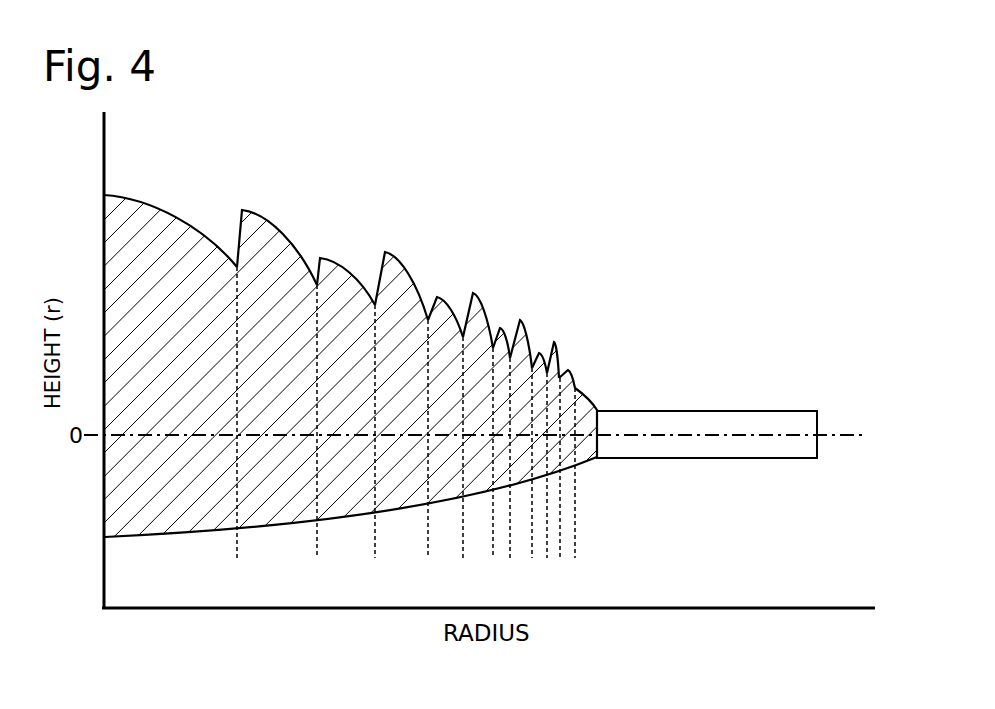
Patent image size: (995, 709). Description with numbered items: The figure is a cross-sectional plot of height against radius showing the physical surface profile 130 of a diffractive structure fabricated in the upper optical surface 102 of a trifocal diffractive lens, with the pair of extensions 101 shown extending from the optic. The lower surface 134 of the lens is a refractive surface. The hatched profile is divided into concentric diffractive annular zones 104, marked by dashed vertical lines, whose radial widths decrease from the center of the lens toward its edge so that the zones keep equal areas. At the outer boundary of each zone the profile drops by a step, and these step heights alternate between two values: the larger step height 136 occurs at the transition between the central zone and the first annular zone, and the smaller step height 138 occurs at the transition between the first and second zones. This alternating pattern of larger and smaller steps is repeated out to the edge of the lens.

The extensions 101 is at (730, 411).
The optical surface 102 is at (590, 403).
The annular zones 104 is at (484, 563).
The physical surface profile 130 is at (453, 209).
The lower surface 134 is at (577, 467).
The larger step height 136 is at (242, 210).
The smaller step height 138 is at (437, 297).